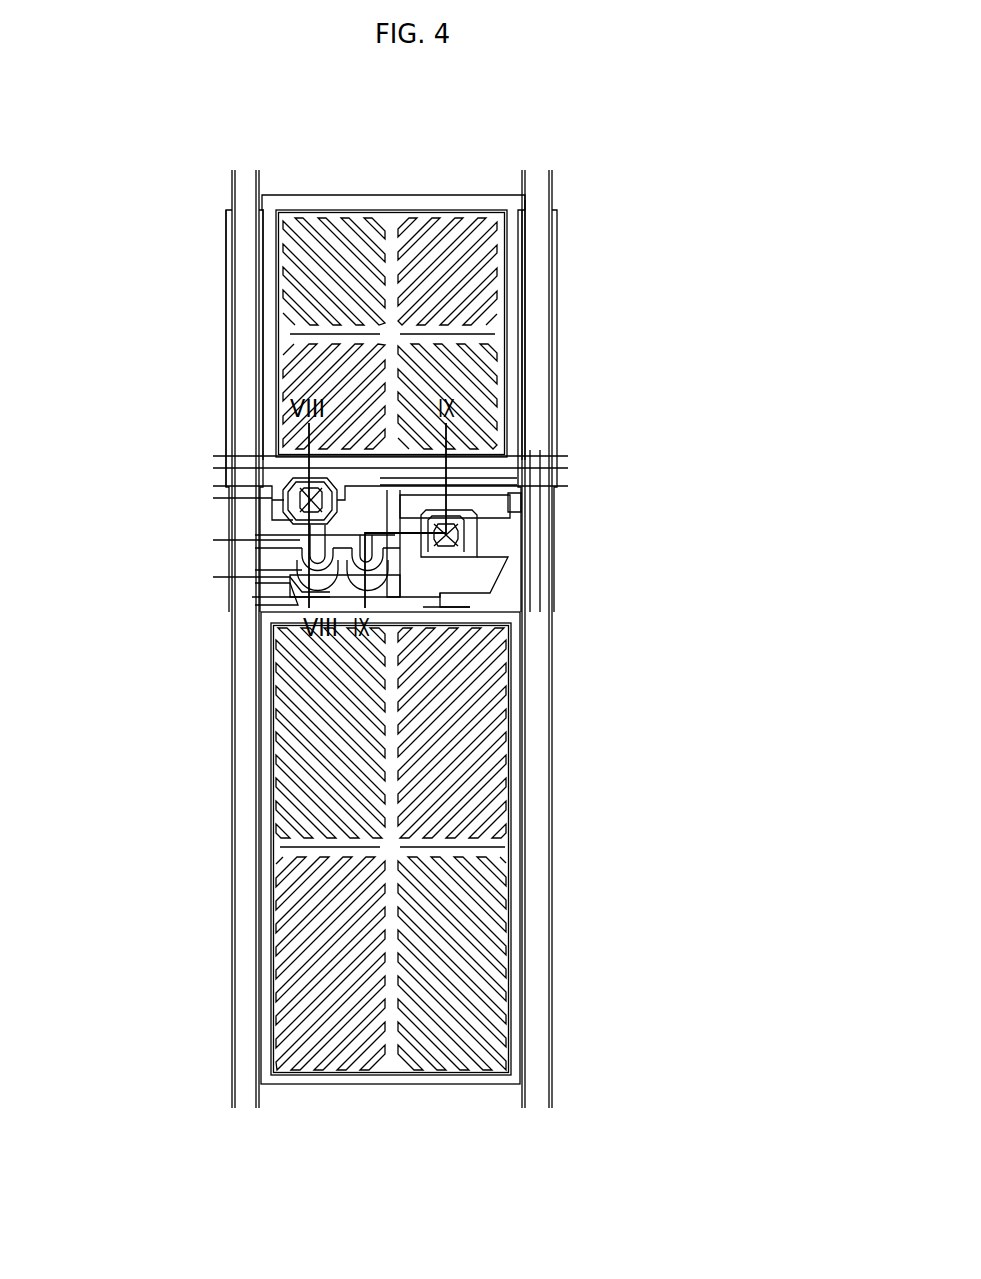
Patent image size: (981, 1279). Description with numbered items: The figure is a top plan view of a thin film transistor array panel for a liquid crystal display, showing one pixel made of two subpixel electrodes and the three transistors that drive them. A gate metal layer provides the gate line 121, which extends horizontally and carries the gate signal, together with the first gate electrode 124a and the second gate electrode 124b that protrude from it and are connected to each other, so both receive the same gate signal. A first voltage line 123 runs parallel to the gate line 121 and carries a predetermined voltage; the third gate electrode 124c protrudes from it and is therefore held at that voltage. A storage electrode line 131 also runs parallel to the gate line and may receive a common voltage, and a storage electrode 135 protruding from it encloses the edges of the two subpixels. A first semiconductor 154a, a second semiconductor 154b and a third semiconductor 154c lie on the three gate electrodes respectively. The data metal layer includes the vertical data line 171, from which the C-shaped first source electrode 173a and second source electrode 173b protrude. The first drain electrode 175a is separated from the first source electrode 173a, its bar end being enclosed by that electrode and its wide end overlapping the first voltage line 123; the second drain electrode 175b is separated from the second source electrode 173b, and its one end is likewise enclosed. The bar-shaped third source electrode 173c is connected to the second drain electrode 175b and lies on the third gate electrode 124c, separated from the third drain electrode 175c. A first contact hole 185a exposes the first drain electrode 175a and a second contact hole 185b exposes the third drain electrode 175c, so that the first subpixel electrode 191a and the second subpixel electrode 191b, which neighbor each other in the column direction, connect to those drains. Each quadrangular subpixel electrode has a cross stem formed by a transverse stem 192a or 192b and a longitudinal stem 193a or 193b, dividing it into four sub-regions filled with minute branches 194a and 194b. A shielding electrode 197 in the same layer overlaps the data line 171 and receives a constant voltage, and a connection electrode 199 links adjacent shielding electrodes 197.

The gate line 121 is at (217, 576).
The first voltage line 123 is at (217, 497).
The first gate electrode 124a is at (290, 577).
The second gate electrode 124b is at (480, 553).
The third gate electrode 124c is at (525, 515).
The storage electrode line 131 is at (566, 470).
The storage electrode 135 is at (512, 348).
The first semiconductor 154a is at (300, 545).
The second semiconductor 154b is at (300, 537).
The third semiconductor 154c is at (540, 500).
The data line 171 is at (242, 707).
The first source electrode 173a is at (302, 560).
The second source electrode 173b is at (470, 598).
The third source electrode 173c is at (520, 492).
The first drain electrode 175a is at (262, 515).
The second drain electrode 175b is at (480, 578).
The third drain electrode 175c is at (530, 522).
The first contact hole 185a is at (298, 480).
The second contact hole 185b is at (513, 455).
The first subpixel electrode 191a is at (490, 327).
The second subpixel electrode 191b is at (490, 848).
The transverse stem 192a is at (452, 333).
The transverse stem 192b is at (470, 848).
The longitudinal stem 193a is at (393, 246).
The longitudinal stem 193b is at (393, 972).
The minute branches 194a is at (458, 267).
The minute branches 194b is at (460, 905).
The shielding electrode 197 is at (228, 248).
The connection electrode 199 is at (447, 532).